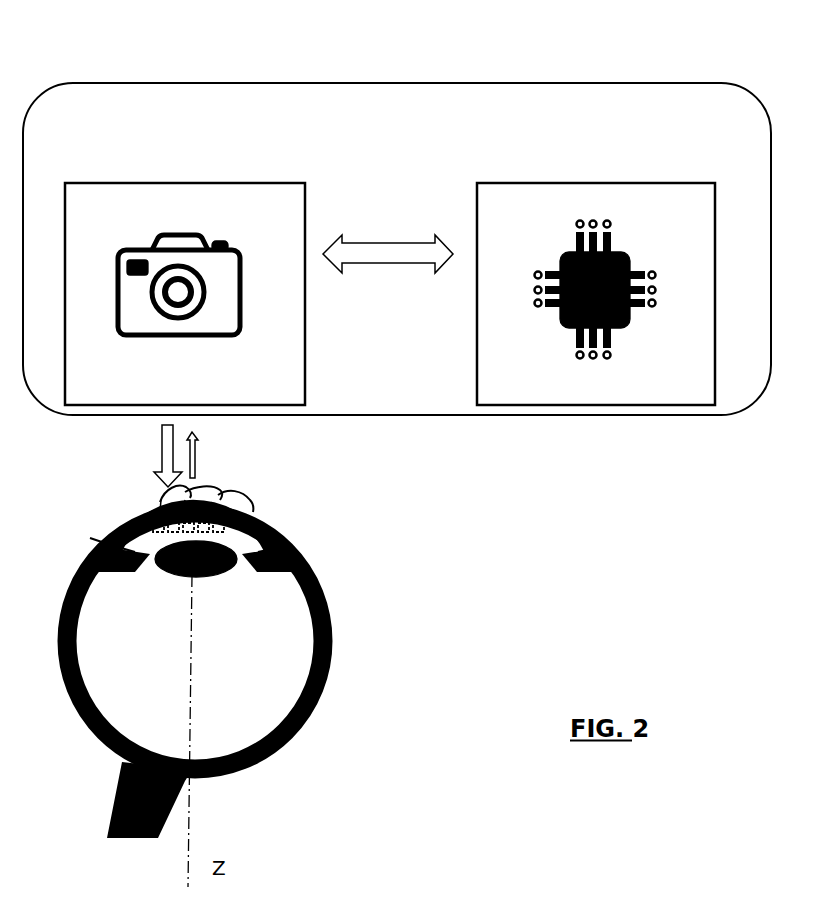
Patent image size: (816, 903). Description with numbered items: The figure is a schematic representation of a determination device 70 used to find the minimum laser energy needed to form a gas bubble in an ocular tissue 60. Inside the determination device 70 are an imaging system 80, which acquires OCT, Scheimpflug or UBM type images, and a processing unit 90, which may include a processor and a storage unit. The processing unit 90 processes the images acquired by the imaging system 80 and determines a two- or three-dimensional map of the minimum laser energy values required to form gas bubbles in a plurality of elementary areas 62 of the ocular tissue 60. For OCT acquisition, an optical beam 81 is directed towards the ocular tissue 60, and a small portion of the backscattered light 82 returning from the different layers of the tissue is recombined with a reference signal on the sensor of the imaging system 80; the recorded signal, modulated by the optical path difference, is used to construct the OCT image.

The determination device 70 is at (504, 90).
The imaging system 80 is at (277, 202).
The processing unit 90 is at (546, 207).
The optical beam 81 is at (167, 455).
The backscattered light 82 is at (195, 440).
The ocular tissue 60 is at (320, 712).
The elementary areas 62 is at (227, 523).